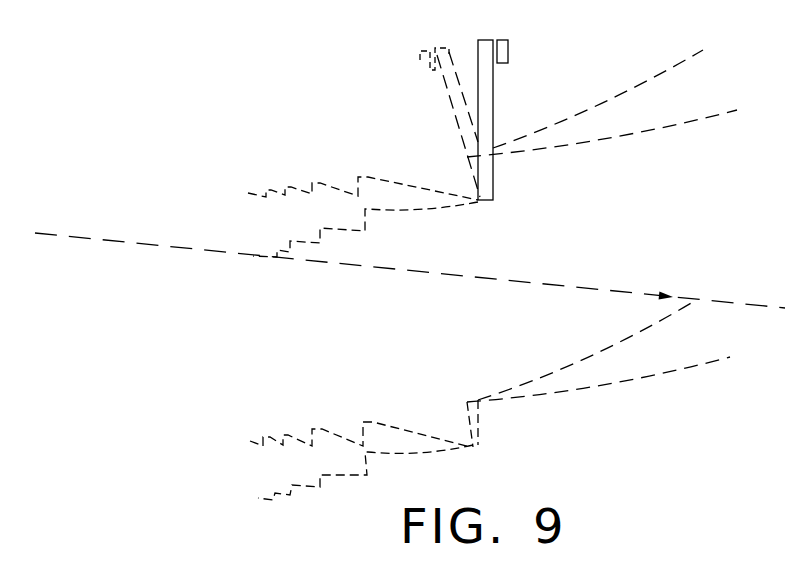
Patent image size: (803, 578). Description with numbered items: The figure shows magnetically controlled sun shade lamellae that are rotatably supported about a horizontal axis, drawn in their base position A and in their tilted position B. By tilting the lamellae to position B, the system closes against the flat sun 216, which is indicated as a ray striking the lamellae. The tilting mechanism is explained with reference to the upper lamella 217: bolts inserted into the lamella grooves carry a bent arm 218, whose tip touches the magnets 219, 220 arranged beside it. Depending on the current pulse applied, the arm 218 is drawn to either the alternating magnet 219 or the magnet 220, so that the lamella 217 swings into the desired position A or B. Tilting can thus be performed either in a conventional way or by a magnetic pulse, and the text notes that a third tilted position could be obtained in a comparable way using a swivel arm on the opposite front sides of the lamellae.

The flat sun 216 is at (147, 245).
The upper lamella 217 is at (408, 140).
The bent arm 218 is at (493, 97).
The magnet 219 is at (510, 52).
The magnet 220 is at (418, 59).
The base position A is at (668, 68).
The tilted position B is at (672, 128).